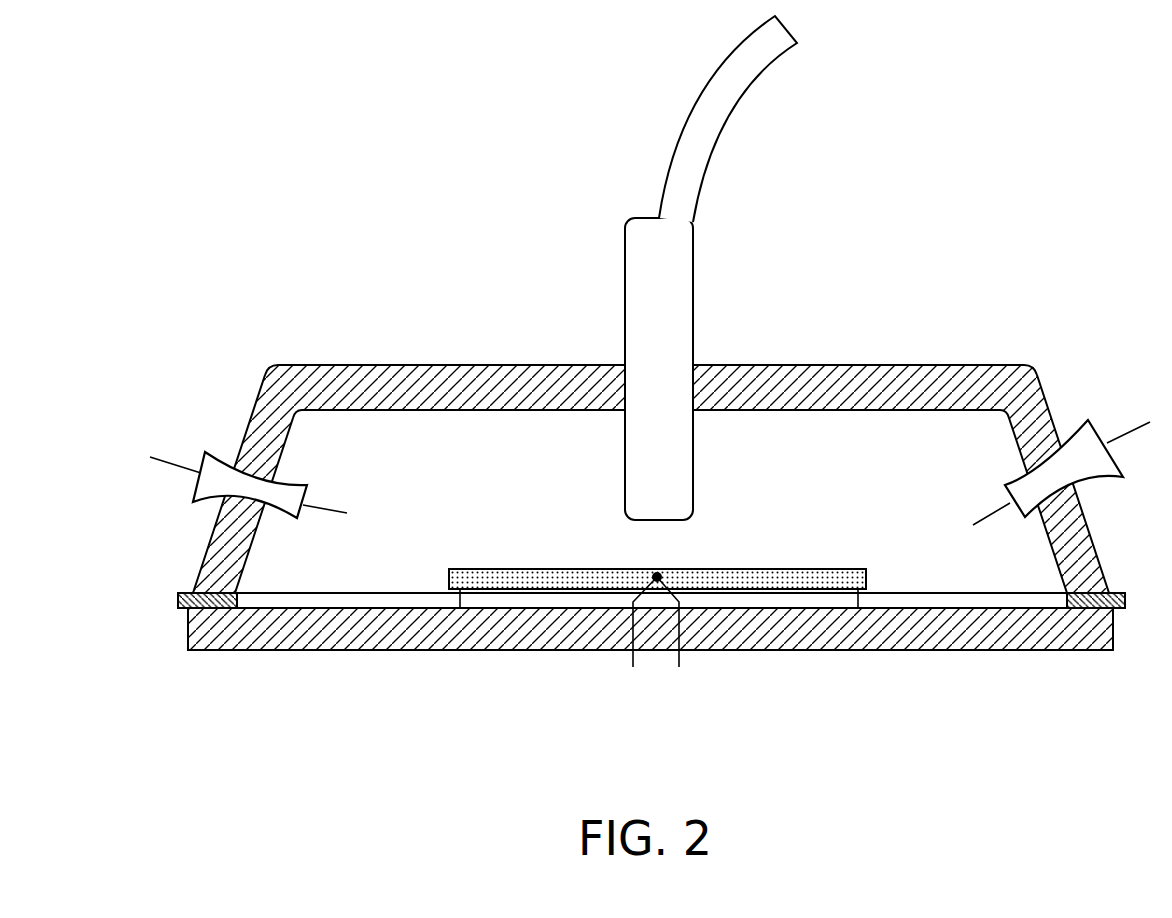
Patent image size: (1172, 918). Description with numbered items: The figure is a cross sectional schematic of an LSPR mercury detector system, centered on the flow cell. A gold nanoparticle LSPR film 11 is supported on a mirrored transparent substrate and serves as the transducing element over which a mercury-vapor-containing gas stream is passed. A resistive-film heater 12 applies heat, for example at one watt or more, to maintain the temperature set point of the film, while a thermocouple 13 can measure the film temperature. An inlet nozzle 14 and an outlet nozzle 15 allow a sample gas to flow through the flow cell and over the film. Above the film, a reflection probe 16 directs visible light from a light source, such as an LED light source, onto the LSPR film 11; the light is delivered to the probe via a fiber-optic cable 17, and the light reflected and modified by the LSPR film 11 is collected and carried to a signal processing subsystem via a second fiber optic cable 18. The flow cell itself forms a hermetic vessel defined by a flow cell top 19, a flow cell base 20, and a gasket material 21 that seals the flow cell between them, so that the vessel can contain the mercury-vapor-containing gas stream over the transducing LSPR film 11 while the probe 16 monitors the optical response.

The gold nanoparticle LSPR film 11 is at (549, 570).
The resistive-film heater 12 is at (500, 597).
The thermocouple 13 is at (633, 627).
The inlet nozzle 14 is at (218, 450).
The outlet nozzle 15 is at (1050, 470).
The reflection probe 16 is at (647, 307).
The fiber-optic cable 17 is at (685, 268).
The second fiber optic cable 18 is at (713, 152).
The flow cell top 19 is at (205, 545).
The flow cell base 20 is at (220, 648).
The gasket material 21 is at (178, 605).